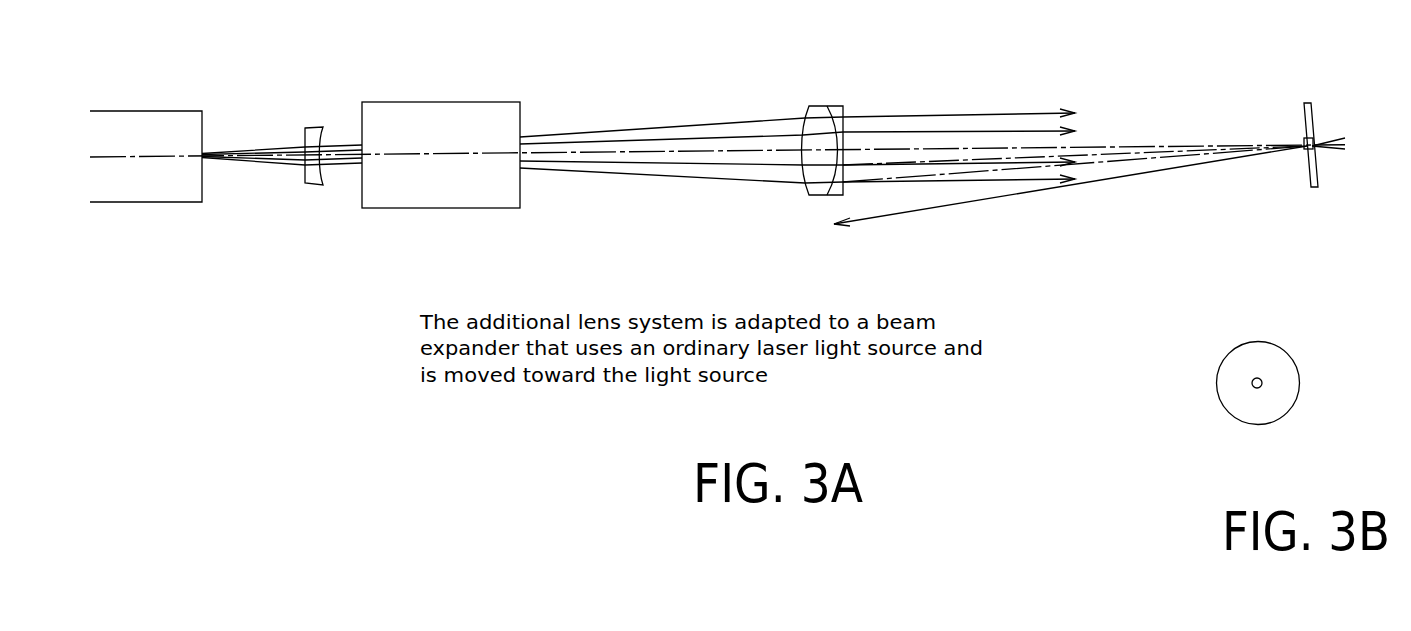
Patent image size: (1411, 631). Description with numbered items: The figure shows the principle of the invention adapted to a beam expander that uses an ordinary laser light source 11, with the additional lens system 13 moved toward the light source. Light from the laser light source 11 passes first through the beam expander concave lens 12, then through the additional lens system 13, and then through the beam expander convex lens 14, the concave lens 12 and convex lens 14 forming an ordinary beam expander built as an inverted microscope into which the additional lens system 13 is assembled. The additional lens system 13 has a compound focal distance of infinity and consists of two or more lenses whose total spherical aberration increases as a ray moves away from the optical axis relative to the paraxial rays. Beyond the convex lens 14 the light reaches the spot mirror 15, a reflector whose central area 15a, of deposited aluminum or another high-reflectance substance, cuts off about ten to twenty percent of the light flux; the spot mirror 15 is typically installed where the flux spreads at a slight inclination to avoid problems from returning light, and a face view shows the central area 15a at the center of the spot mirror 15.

In FIG. 3A, the laser light source 11 is at (152, 118).
In FIG. 3A, the beam expander concave lens 12 is at (310, 123).
In FIG. 3A, the additional lens system 13 is at (443, 112).
In FIG. 3A, the beam expander convex lens 14 is at (818, 118).
In FIG. 3A, the spot mirror 15 is at (1308, 102).
In FIG. 3B, the spot mirror 15 is at (1287, 379).
In FIG. 3A, the central area of spot mirror 15a is at (1315, 134).
In FIG. 3B, the central area of spot mirror 15a is at (1255, 388).